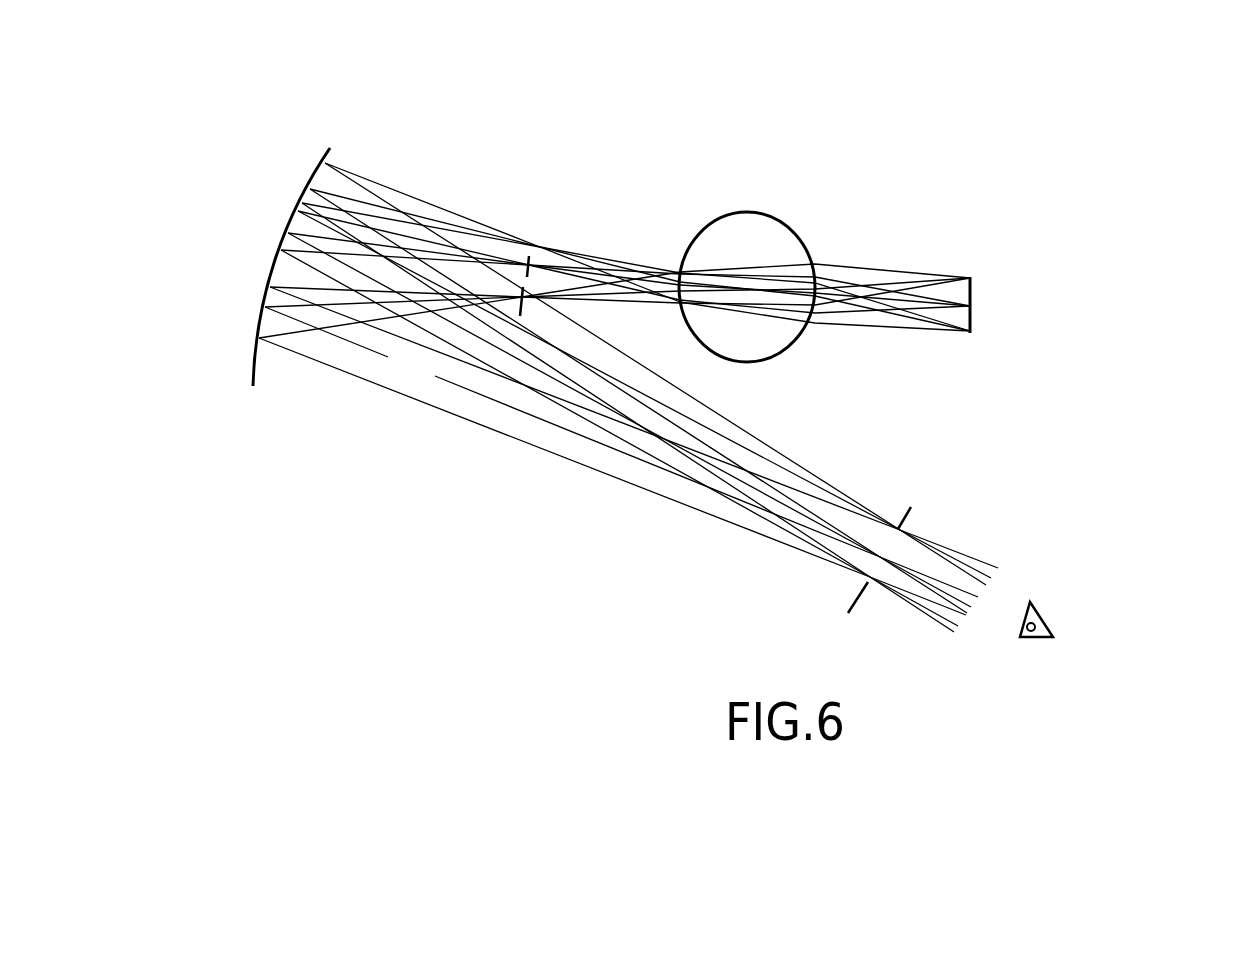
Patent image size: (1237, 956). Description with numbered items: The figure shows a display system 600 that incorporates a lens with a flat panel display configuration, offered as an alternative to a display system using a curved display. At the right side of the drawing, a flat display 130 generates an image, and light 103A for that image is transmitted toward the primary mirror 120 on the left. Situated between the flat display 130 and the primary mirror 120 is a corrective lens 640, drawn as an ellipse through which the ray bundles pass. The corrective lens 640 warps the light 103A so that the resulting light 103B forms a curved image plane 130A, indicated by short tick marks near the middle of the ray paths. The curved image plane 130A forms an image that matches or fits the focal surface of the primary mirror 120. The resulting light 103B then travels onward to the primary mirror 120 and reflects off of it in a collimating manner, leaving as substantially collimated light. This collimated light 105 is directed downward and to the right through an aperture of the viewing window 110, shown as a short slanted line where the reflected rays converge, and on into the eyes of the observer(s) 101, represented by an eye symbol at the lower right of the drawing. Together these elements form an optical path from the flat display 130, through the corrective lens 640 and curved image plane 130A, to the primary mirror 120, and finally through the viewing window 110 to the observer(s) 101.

The display system 600 is at (370, 90).
The primary mirror 120 is at (328, 147).
The curved image plane 130A is at (540, 237).
The corrective lens 640 is at (768, 216).
The flat display 130 is at (972, 292).
The light 103A is at (853, 276).
The resulting light 103B is at (611, 333).
The collimated light 105 is at (393, 384).
The viewing window 110 is at (911, 507).
The observer(s) 101 is at (1107, 643).